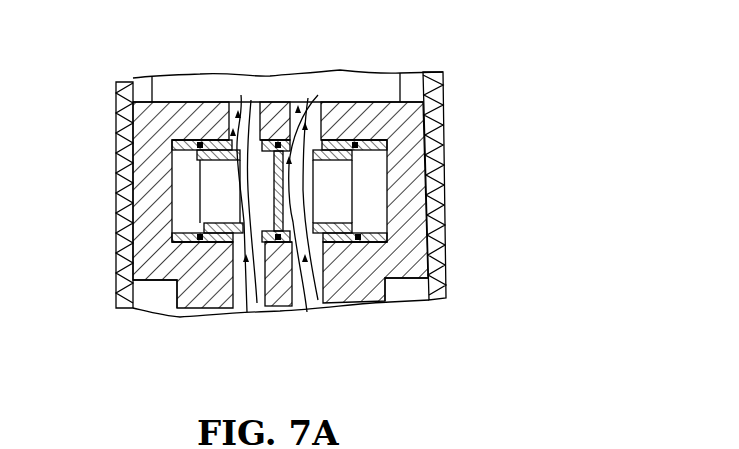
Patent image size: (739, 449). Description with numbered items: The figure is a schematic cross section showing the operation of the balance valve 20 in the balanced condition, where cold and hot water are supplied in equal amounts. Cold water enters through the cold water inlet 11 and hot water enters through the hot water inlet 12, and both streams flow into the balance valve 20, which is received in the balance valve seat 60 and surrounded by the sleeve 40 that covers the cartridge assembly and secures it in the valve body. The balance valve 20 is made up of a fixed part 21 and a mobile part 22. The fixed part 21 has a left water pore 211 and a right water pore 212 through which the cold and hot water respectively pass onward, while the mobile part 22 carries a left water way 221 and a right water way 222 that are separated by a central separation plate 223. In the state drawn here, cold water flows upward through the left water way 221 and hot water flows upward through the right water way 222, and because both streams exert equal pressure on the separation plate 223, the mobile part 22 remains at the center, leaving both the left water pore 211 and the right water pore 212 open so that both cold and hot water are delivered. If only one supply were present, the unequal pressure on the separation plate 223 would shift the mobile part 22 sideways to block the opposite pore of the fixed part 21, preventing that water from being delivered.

The cold water inlet 11 is at (241, 95).
The hot water inlet 12 is at (318, 95).
The balance valve 20 is at (383, 133).
The fixed part 21 is at (165, 132).
The mobile part 22 is at (200, 222).
The sleeve 40 is at (442, 168).
The balance valve seat 60 is at (442, 73).
The left water pore 211 is at (207, 313).
The right water pore 212 is at (350, 308).
The left water way 221 is at (245, 308).
The right water way 222 is at (315, 290).
The separation plate 223 is at (295, 95).